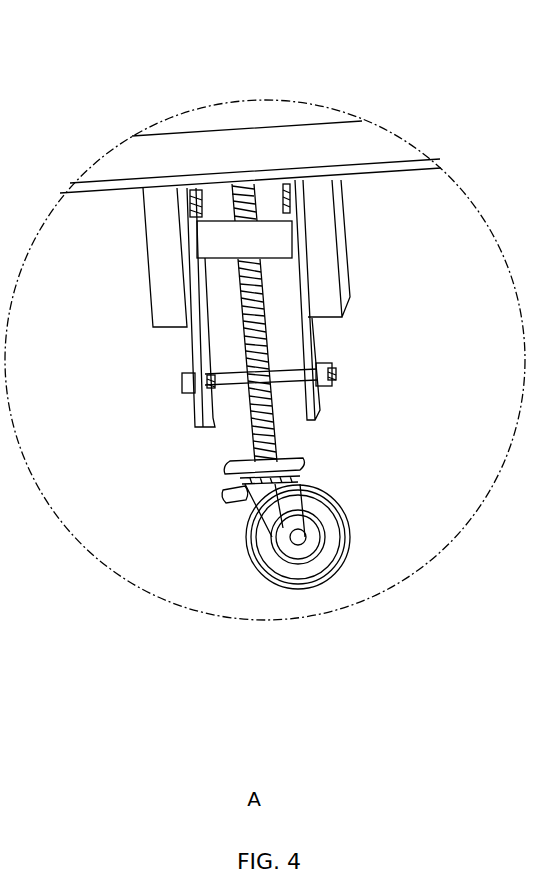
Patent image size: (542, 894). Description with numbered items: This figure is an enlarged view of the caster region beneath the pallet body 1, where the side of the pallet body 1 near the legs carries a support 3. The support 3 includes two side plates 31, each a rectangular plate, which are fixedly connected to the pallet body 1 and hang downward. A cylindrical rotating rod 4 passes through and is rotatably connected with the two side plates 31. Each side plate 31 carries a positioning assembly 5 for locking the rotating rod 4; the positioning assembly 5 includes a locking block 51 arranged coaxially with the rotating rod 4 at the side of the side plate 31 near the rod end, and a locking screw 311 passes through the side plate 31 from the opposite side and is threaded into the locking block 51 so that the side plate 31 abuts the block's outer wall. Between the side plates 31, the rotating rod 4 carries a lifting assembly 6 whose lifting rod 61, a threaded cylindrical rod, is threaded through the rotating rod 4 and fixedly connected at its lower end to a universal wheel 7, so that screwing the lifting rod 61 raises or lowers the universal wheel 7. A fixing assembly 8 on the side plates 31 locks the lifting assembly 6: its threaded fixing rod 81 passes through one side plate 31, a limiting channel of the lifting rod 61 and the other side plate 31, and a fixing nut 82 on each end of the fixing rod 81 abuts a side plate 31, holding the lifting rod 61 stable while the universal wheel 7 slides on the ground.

The pallet body 1 is at (337, 157).
The locking screw 311 is at (192, 193).
The rotating rod 4 is at (277, 227).
The locking block 51 is at (172, 252).
The positioning assembly 5 is at (352, 240).
The side plate 31 is at (185, 292).
The support 3 is at (185, 353).
The lifting assembly 6 is at (267, 327).
The lifting rod 61 is at (253, 413).
The fixing rod 81 is at (220, 378).
The fixing nut 82 is at (188, 385).
The fixing assembly 8 is at (333, 385).
The universal wheel 7 is at (270, 537).